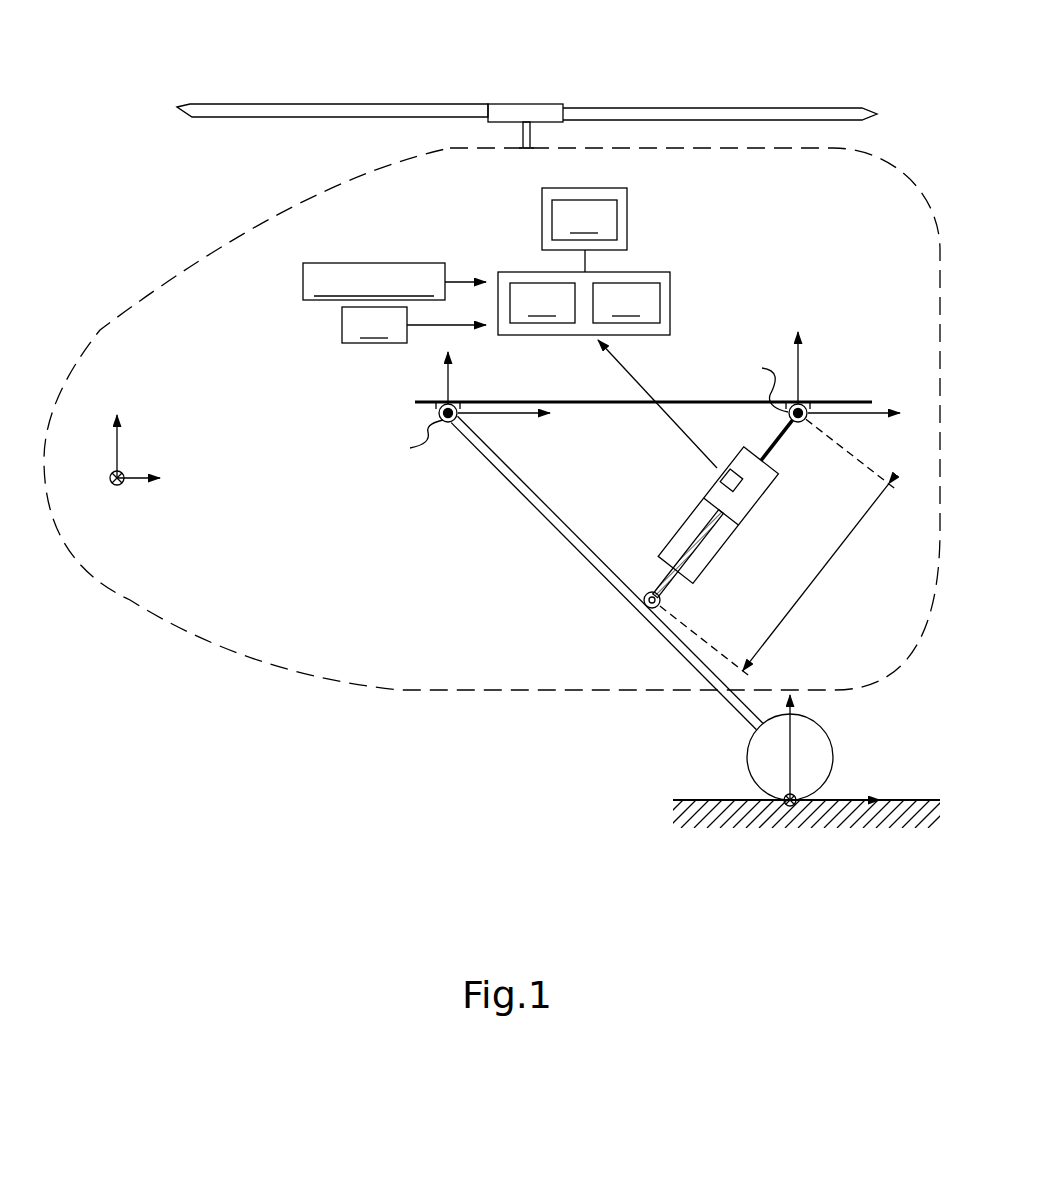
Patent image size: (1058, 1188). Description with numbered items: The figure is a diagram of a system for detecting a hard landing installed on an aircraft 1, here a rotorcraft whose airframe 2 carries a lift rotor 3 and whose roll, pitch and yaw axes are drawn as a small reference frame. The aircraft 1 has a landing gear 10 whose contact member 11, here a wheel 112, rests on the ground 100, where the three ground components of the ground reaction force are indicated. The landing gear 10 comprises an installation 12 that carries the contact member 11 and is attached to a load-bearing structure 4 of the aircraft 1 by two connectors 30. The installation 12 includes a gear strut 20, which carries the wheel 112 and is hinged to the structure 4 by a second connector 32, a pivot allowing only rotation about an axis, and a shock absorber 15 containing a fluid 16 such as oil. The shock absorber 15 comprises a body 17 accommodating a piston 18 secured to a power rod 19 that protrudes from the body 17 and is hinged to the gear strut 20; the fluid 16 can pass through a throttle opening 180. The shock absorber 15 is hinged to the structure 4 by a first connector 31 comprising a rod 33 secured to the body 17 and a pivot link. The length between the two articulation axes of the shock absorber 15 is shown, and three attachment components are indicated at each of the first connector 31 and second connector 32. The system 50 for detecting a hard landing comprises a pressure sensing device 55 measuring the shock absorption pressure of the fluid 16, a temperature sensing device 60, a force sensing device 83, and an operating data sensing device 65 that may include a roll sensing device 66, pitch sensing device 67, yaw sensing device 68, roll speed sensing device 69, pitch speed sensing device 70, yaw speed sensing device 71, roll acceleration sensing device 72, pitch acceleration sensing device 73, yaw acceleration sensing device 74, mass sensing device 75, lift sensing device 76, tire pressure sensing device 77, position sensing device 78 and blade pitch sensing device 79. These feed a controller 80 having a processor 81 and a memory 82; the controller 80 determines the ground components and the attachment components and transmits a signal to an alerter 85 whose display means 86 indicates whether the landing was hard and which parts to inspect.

The aircraft 1 is at (140, 230).
The airframe 2 is at (203, 245).
The lift rotor 3 is at (827, 97).
The load-bearing structure 4 is at (858, 402).
The landing gear 10 is at (638, 715).
The contact member 11 is at (835, 748).
The installation 12 is at (467, 525).
The shock absorber 15 is at (738, 515).
The fluid 16 is at (743, 512).
The body 17 is at (762, 497).
The piston 18 is at (733, 484).
The power rod 19 is at (660, 588).
The gear strut 20 is at (538, 517).
The connector 30 is at (609, 488).
The first connector 31 is at (806, 425).
The second connector 32 is at (445, 445).
The rod 33 is at (784, 440).
The system for detecting a hard landing 50 is at (280, 372).
The pressure sensing device 55 is at (736, 460).
The temperature sensing device 60 is at (414, 325).
The operating data sensing device 65 is at (302, 282).
The roll sensing device 66 is at (394, 281).
The pitch sensing device 67 is at (394, 281).
The yaw sensing device 68 is at (394, 281).
The roll speed sensing device 69 is at (394, 281).
The pitch speed sensing device 70 is at (394, 281).
The yaw speed sensing device 71 is at (394, 281).
The roll acceleration sensing device 72 is at (394, 281).
The pitch acceleration sensing device 73 is at (394, 281).
The yaw acceleration sensing device 74 is at (394, 281).
The mass sensing device 75 is at (394, 281).
The lift sensing device 76 is at (394, 281).
The pressure sensing device 77 is at (394, 281).
The position sensing device 78 is at (394, 281).
The blade pitch sensing device 79 is at (394, 281).
The controller 80 is at (670, 302).
The processor 81 is at (542, 303).
The memory 82 is at (626, 303).
The force sensing device 83 is at (394, 281).
The alerter 85 is at (627, 218).
The display means 86 is at (584, 220).
The ground 100 is at (713, 800).
The wheel 112 is at (836, 763).
The throttle opening 180 is at (716, 505).